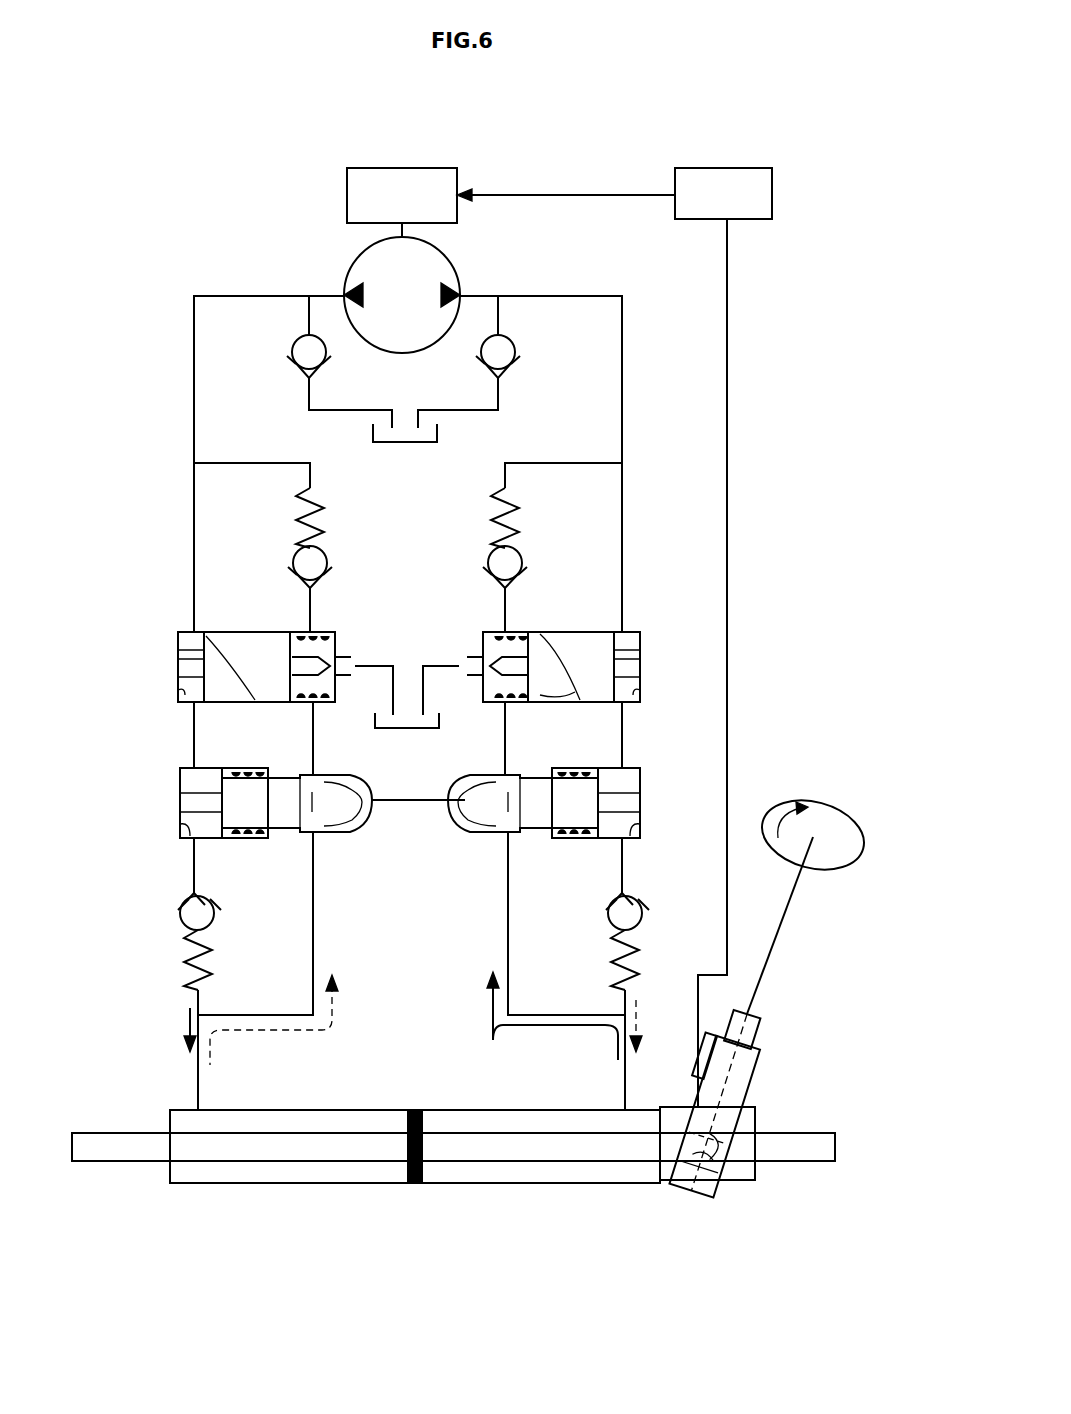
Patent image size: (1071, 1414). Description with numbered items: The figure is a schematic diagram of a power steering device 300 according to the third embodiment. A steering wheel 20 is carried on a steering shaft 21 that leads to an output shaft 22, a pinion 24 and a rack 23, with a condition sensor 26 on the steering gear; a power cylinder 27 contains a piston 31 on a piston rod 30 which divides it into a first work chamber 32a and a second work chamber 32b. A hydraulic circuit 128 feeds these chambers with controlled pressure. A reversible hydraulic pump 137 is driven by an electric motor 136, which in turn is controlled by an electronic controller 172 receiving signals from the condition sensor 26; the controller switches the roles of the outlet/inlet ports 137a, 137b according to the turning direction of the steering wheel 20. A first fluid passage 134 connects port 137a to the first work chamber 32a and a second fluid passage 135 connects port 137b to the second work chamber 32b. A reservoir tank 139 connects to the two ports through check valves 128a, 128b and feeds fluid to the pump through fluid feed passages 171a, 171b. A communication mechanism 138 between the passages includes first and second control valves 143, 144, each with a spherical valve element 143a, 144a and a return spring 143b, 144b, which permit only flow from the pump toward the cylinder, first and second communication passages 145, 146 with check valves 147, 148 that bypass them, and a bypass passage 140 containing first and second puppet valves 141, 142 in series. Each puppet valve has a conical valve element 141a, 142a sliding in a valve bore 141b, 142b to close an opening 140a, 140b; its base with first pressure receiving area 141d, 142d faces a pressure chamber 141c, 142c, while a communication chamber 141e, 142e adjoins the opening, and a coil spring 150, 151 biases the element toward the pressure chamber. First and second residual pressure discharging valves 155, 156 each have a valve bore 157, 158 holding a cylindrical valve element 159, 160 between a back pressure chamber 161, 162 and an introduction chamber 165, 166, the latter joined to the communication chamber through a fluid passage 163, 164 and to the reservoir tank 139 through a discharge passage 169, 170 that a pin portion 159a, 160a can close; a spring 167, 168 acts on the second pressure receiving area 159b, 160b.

The power steering device 300 is at (524, 113).
The electric motor 136 is at (402, 166).
The electronic controller 172 is at (722, 166).
The reversible hydraulic pump 137 is at (358, 262).
The outlet/inlet port 137a is at (344, 293).
The outlet/inlet port 137b is at (462, 293).
The first fluid passage 134 is at (192, 388).
The second fluid passage 135 is at (624, 358).
The hydraulic circuit 128 is at (165, 490).
The check valve 128a is at (296, 345).
The check valve 128b is at (513, 340).
The fluid feed passage 171a is at (311, 388).
The fluid feed passage 171b is at (500, 388).
The reservoir tank 139 is at (405, 444).
The first communication passage 145 is at (246, 461).
The second communication passage 146 is at (550, 461).
The check valve 147 is at (330, 556).
The check valve 148 is at (486, 556).
The first residual pressure discharging valve 155 is at (222, 620).
The second residual pressure discharging valve 156 is at (604, 618).
The valve bore 157 is at (192, 636).
The valve bore 158 is at (636, 640).
The cylindrical valve element 159 is at (228, 662).
The pin portion 159a is at (255, 640).
The second pressure receiving area 159b is at (288, 656).
The cylindrical valve element 160 is at (600, 664).
The pin portion 160a is at (558, 640).
The second pressure receiving area 160b is at (552, 698).
The back pressure chamber 161 is at (188, 692).
The back pressure chamber 162 is at (636, 700).
The communication mechanism 138 is at (660, 691).
The introduction chamber 165 is at (338, 660).
The introduction chamber 166 is at (490, 640).
The coil spring 167 is at (332, 634).
The coil spring 168 is at (524, 632).
The discharge passage 169 is at (380, 663).
The discharge passage 170 is at (436, 663).
The fluid passage 163 is at (316, 727).
The fluid passage 164 is at (503, 720).
The coil spring 150 is at (246, 767).
The coil spring 151 is at (552, 767).
The first puppet valve 141 is at (225, 760).
The valve element 141a is at (310, 812).
The valve bore 141b is at (330, 832).
The pressure chamber 141c is at (186, 824).
The first pressure receiving area 141d is at (214, 790).
The communication chamber 141e is at (350, 826).
The second puppet valve 142 is at (595, 760).
The valve element 142a is at (518, 812).
The valve bore 142b is at (490, 832).
The pressure chamber 142c is at (634, 824).
The first pressure receiving area 142d is at (606, 790).
The communication chamber 142e is at (482, 826).
The bypass passage 140 is at (316, 928).
The opening 140a is at (370, 797).
The opening 140b is at (458, 797).
The first control valve 143 is at (228, 948).
The spherical valve element 143a is at (180, 913).
The return spring 143b is at (182, 976).
The second control valve 144 is at (595, 945).
The spherical valve element 144a is at (642, 913).
The return spring 144b is at (642, 948).
The steering wheel 20 is at (850, 815).
The steering shaft 21 is at (786, 926).
The output shaft 22 is at (748, 1090).
The rack 23 is at (715, 1160).
The pinion 24 is at (700, 1185).
The condition sensor 26 is at (694, 1076).
The power cylinder 27 is at (598, 1183).
The piston rod 30 is at (218, 1160).
The piston 31 is at (424, 1165).
The first work chamber 32a is at (290, 1180).
The second work chamber 32b is at (538, 1180).